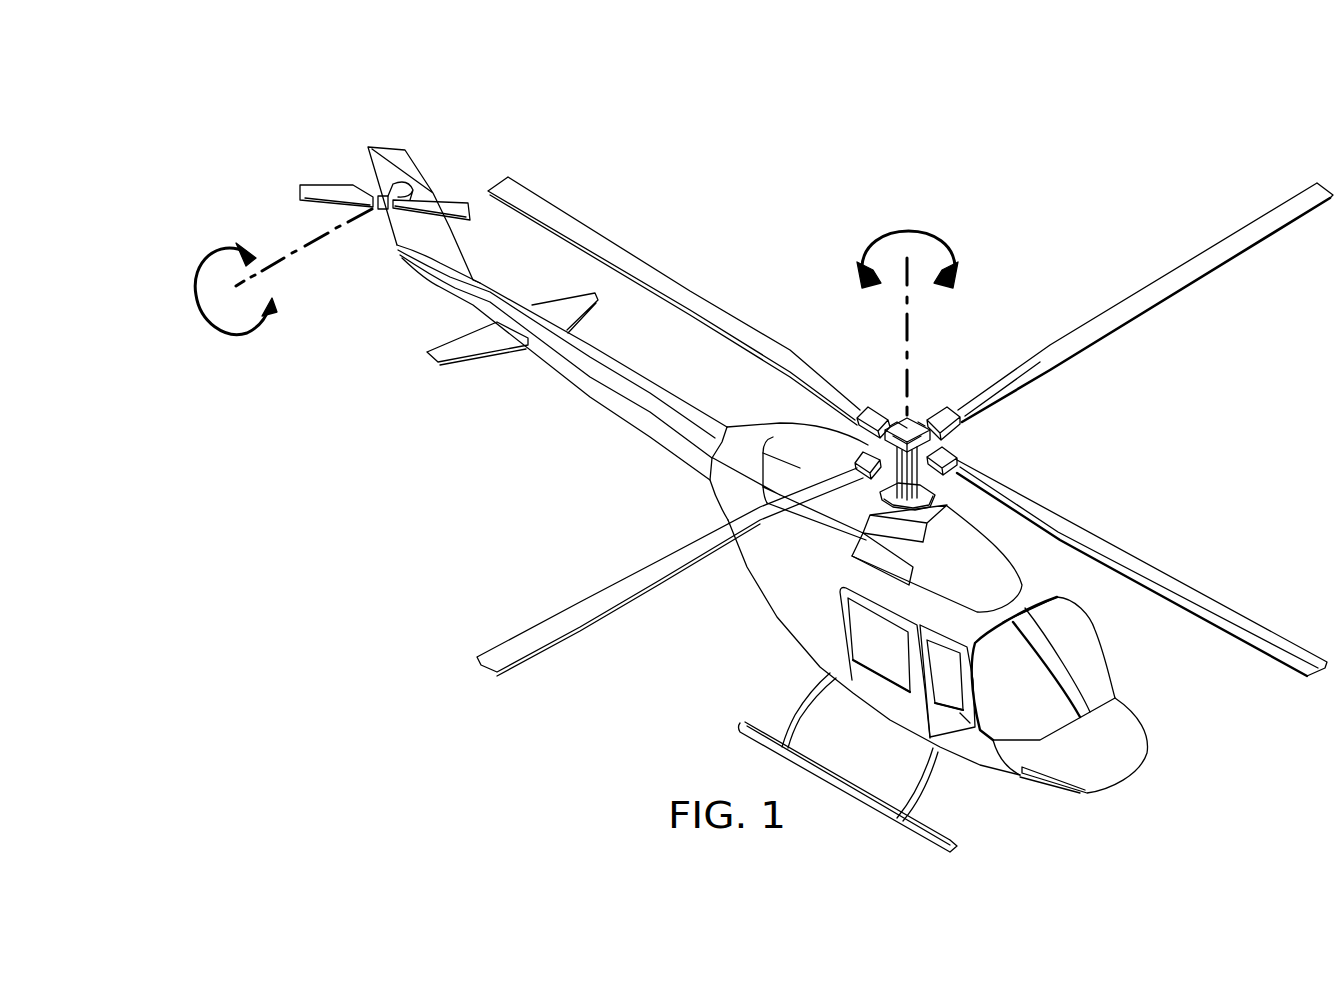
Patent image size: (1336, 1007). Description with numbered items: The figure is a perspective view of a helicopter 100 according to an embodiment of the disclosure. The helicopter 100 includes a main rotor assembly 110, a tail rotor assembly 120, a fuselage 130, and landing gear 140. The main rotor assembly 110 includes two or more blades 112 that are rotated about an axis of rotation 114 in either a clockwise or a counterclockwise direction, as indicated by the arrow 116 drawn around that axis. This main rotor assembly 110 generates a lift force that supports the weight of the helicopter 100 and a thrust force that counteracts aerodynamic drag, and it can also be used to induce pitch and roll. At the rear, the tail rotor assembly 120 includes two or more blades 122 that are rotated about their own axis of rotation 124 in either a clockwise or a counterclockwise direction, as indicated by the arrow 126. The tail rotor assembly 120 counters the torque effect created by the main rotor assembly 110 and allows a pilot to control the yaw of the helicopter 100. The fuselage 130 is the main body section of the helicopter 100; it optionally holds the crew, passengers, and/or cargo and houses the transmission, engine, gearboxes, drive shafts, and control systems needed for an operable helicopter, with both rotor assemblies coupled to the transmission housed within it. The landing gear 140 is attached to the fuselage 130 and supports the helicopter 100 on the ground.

The helicopter 100 is at (862, 182).
The main rotor assembly 110 is at (870, 374).
The blades 112 is at (648, 263).
The axis of rotation 114 is at (910, 338).
The arrow 116 is at (860, 257).
The tail rotor assembly 120 is at (332, 95).
The blades 122 is at (322, 184).
The axis of rotation 124 is at (305, 257).
The arrow 126 is at (200, 270).
The fuselage 130 is at (1150, 740).
The landing gear 140 is at (933, 840).